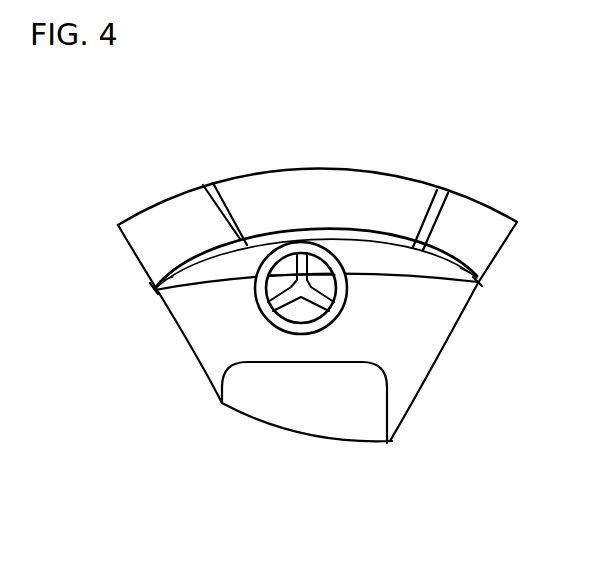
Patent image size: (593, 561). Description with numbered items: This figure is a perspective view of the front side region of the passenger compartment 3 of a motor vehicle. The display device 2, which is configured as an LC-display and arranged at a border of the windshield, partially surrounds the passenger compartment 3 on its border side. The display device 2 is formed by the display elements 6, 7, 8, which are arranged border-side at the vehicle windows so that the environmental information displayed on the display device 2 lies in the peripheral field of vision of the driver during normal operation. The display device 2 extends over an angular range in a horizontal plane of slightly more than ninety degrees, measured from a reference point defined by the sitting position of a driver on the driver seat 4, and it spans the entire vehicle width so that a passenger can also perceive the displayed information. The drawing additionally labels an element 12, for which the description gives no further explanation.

The display device 2 is at (380, 220).
The passenger compartment 3 is at (402, 335).
The driver seat 4 is at (343, 418).
The display element 6 is at (155, 292).
The display element 7 is at (327, 232).
The display element 8 is at (479, 281).
The cover segment 12 is at (165, 222).